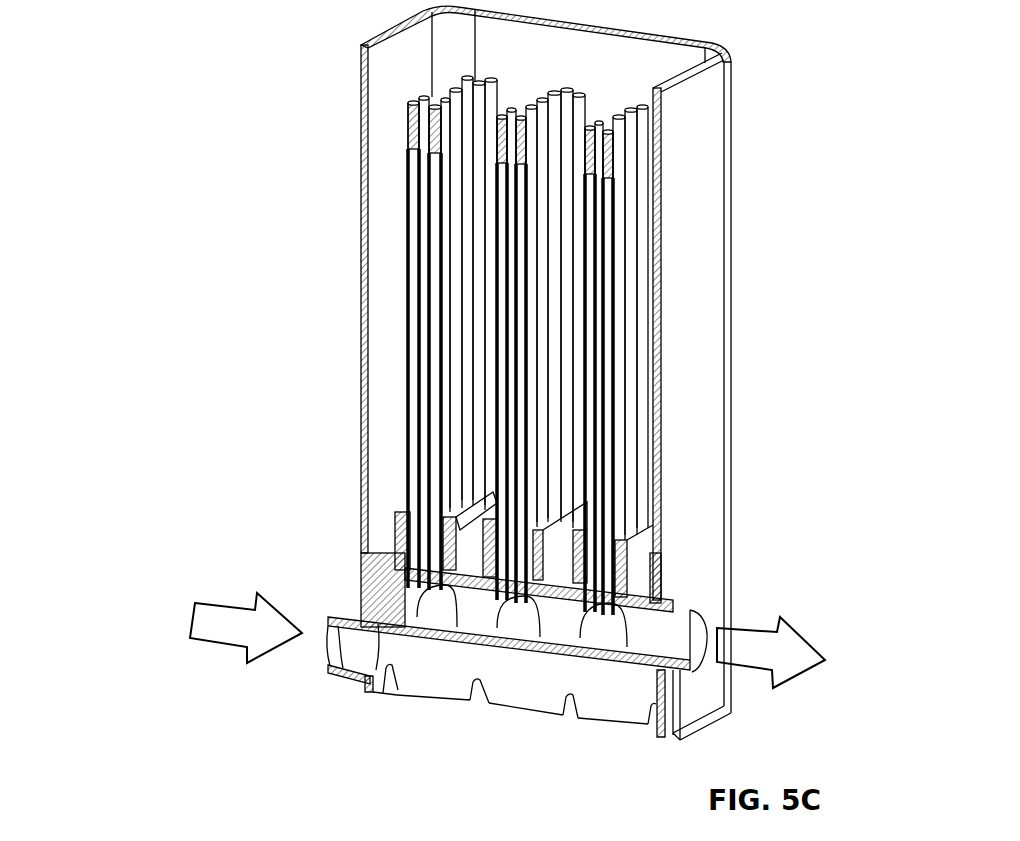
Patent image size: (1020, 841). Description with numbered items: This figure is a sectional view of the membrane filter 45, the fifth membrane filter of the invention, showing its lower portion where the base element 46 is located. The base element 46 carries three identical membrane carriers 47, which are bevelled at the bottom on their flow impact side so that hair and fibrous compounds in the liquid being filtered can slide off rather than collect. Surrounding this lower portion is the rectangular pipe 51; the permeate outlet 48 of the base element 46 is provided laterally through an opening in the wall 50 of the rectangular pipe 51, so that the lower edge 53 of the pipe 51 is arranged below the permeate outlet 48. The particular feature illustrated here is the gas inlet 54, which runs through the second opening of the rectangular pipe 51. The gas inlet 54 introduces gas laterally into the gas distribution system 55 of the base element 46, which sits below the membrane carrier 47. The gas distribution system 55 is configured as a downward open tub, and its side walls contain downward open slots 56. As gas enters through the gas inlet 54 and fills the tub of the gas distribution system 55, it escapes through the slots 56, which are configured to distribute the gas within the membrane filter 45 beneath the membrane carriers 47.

The membrane filter 45 is at (176, 162).
The base element 46 is at (262, 558).
The membrane carrier 47 is at (398, 513).
The permeate outlet 48 is at (690, 635).
The wall 50 is at (363, 142).
The rectangular pipe 51 is at (703, 367).
The lower edge 53 is at (710, 723).
The gas inlet 54 is at (333, 648).
The gas distribution system 55 is at (445, 668).
The slot 56 is at (568, 705).